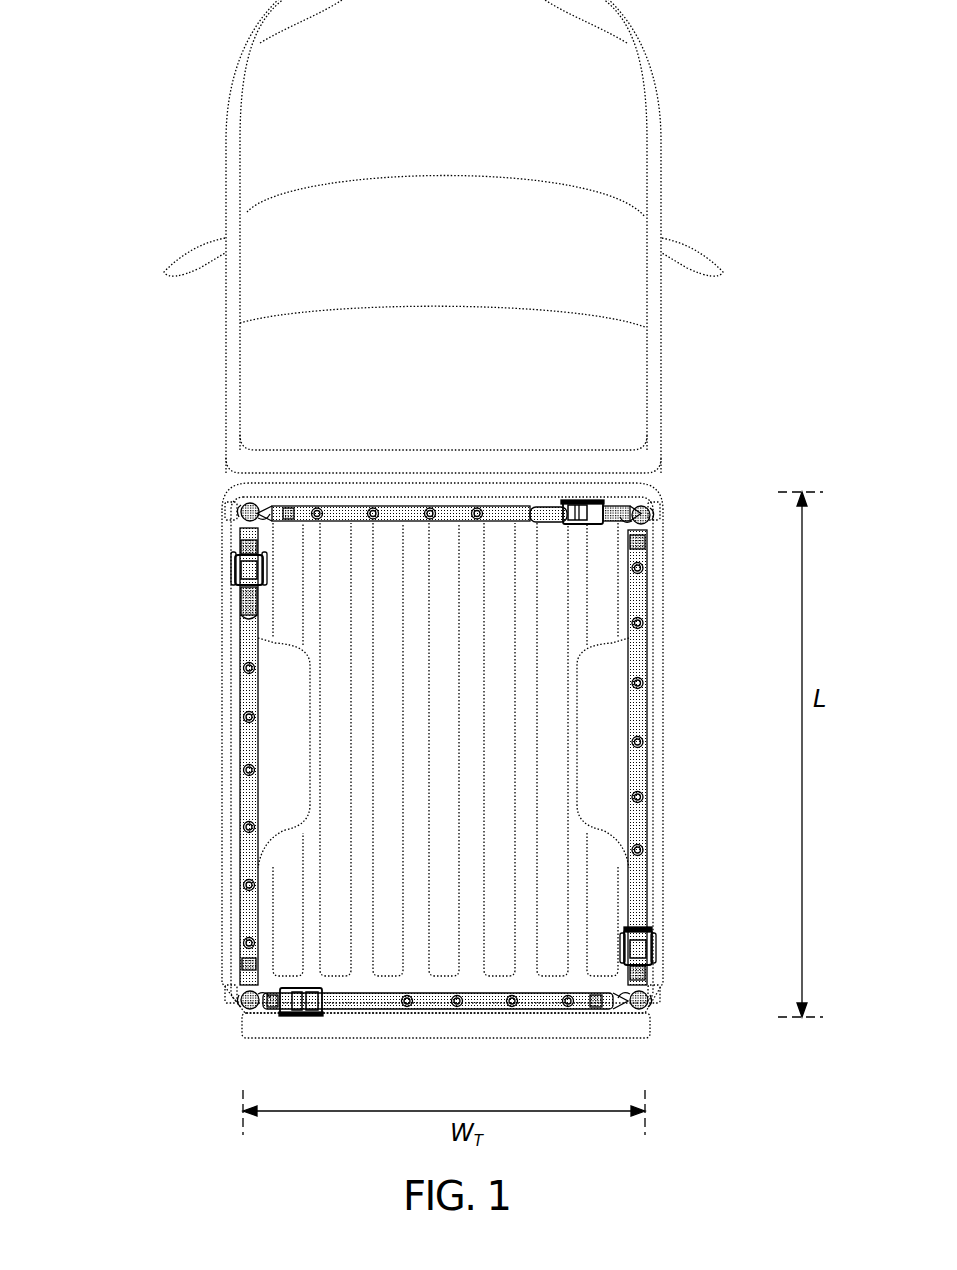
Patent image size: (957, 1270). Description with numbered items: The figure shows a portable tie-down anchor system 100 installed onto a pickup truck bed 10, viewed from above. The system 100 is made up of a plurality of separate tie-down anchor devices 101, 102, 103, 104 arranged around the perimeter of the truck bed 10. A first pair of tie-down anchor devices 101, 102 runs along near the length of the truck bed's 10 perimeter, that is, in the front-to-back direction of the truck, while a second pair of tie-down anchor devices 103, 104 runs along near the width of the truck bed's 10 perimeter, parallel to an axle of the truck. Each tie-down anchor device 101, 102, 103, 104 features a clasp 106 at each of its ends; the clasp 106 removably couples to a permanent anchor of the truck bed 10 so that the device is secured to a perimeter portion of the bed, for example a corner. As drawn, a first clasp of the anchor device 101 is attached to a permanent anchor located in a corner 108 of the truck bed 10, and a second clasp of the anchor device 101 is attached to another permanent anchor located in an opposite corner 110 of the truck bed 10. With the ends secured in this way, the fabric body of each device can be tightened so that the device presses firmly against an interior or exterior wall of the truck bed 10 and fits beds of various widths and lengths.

The portable tie-down anchor system 100 is at (165, 480).
The pickup truck bed 10 is at (459, 705).
The tie-down anchor device 101 is at (247, 697).
The tie-down anchor device 102 is at (642, 768).
The tie-down anchor device 103 is at (403, 512).
The tie-down anchor device 104 is at (433, 1000).
The clasp 106 is at (643, 527).
The corner of the truck bed 108 is at (233, 990).
The opposite corner of the truck bed 110 is at (237, 507).